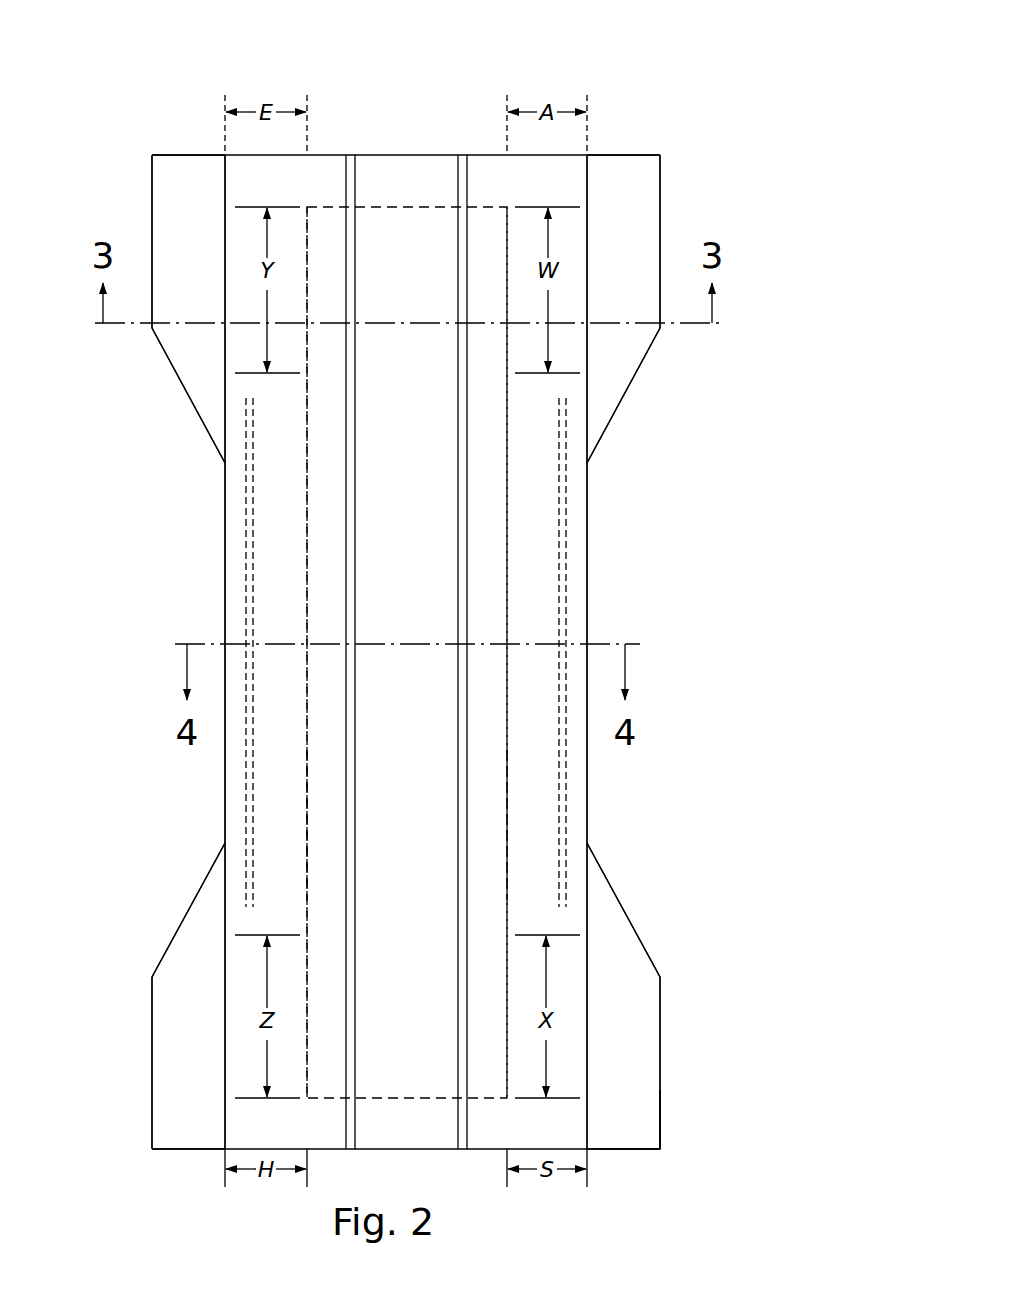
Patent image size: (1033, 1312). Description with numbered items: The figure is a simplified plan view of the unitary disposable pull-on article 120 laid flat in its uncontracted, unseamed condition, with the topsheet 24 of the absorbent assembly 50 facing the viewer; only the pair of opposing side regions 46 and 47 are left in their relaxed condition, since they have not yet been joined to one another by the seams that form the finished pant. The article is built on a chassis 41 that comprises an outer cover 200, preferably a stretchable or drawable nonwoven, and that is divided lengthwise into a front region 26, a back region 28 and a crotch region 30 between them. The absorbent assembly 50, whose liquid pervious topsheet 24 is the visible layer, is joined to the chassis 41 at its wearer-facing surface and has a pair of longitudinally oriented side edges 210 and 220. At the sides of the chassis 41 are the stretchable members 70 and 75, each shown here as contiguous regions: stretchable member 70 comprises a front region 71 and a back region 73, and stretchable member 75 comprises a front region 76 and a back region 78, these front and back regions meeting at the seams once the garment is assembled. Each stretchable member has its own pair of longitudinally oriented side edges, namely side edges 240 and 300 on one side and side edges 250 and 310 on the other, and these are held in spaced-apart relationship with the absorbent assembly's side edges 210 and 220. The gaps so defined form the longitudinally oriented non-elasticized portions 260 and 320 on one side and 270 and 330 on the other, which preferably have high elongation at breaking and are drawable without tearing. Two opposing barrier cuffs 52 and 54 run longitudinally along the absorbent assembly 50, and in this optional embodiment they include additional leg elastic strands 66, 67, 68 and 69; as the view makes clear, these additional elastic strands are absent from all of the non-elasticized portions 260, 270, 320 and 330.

The disposable pull-on article 120 is at (574, 60).
The outer cover 200 is at (648, 1145).
The back region 28 is at (405, 172).
The front region 26 is at (400, 1138).
The topsheet 24 is at (318, 808).
The crotch region 30 is at (577, 813).
The chassis 41 is at (617, 1137).
The side region 46 is at (222, 356).
The side region 47 is at (607, 365).
The absorbent assembly 50 is at (497, 613).
The barrier cuff 52 is at (348, 507).
The barrier cuff 54 is at (468, 577).
The leg elastic 66 is at (248, 582).
The leg elastic 67 is at (245, 613).
The leg elastic 68 is at (560, 518).
The leg elastic 69 is at (565, 634).
The stretchable member 70 is at (175, 212).
The front region of stretchable member 71 is at (168, 1028).
The back region of stretchable member 73 is at (175, 188).
The stretchable member 75 is at (635, 232).
The front region of stretchable member 76 is at (648, 1108).
The back region of stretchable member 78 is at (642, 188).
The longitudinally oriented side edge of absorbent assembly 210 is at (509, 882).
The longitudinally oriented side edge of absorbent assembly 220 is at (302, 834).
The longitudinally oriented side edge of stretchable member 240 is at (590, 345).
The longitudinally oriented side edge of stretchable member 250 is at (170, 340).
The non-elasticized portion 260 is at (572, 232).
The non-elasticized portion 270 is at (247, 223).
The longitudinally oriented side edge of stretchable member 300 is at (590, 998).
The longitudinally oriented side edge of stretchable member 310 is at (222, 1009).
The non-elasticized portion 320 is at (563, 973).
The non-elasticized portion 330 is at (242, 1075).